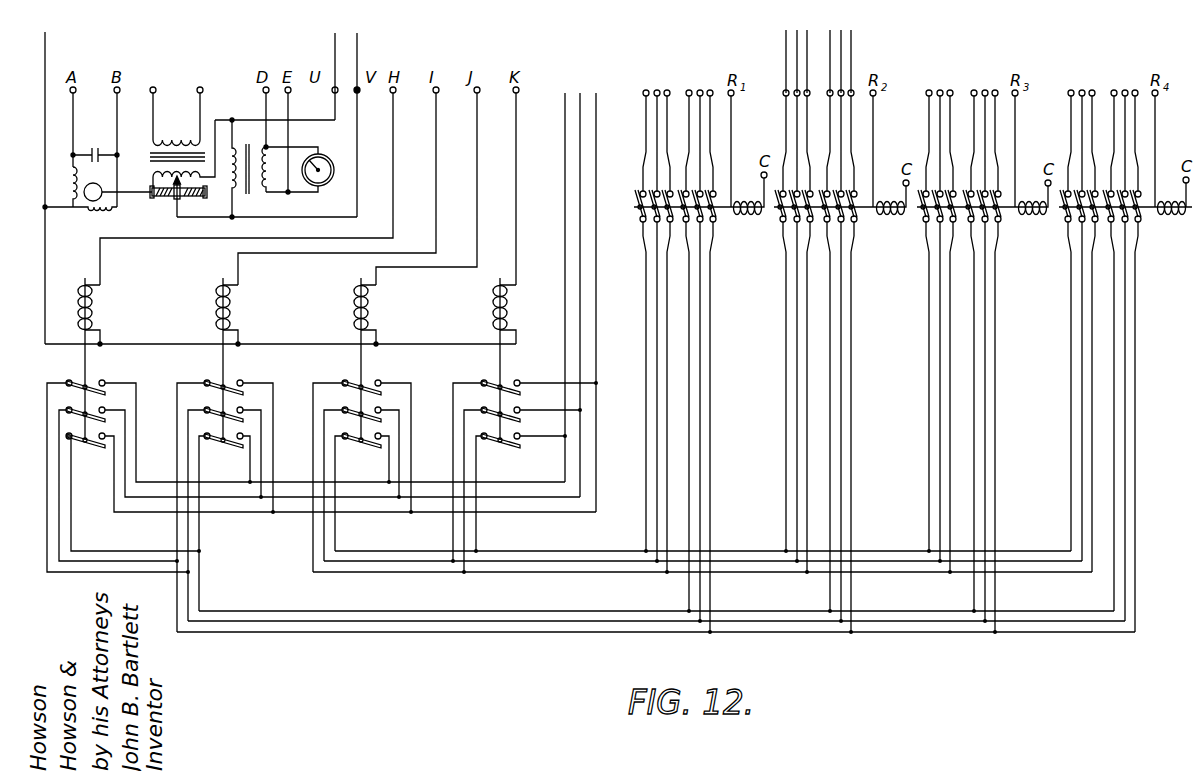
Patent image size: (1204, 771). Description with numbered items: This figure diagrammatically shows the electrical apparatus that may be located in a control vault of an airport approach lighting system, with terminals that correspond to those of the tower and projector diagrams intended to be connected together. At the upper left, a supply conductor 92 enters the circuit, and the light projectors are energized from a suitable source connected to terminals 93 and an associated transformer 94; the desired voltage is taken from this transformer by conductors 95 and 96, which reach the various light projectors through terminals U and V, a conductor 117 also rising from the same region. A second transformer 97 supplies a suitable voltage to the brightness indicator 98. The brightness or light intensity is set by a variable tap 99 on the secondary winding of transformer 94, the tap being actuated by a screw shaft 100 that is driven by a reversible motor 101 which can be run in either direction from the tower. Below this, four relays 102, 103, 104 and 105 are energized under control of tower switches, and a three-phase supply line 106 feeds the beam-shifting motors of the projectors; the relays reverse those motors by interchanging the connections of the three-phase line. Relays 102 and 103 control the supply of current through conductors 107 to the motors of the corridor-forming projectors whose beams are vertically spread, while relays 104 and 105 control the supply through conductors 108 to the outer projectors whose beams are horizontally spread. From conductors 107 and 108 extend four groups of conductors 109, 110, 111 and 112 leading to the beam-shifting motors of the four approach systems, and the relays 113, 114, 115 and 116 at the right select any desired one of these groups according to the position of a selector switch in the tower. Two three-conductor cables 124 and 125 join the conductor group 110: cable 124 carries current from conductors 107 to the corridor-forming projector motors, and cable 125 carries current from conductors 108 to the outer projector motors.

The conductor 92 is at (45, 48).
The terminals 93 is at (196, 88).
The transformer 94 is at (154, 160).
The conductor 95 is at (304, 120).
The conductor 96 is at (358, 138).
The second transformer 97 is at (248, 196).
The brightness indicator 98 is at (330, 173).
The variable tap 99 is at (174, 205).
The screw shaft 100 is at (170, 195).
The reversible motor 101 is at (86, 206).
The relay 102 is at (98, 308).
The relay 103 is at (236, 308).
The relay 104 is at (374, 308).
The relay 105 is at (513, 308).
The three-phase supply line 106 is at (611, 83).
The conductors 107 is at (474, 625).
The conductors 108 is at (564, 556).
The group of conductors 109 is at (684, 419).
The group of conductors 110 is at (823, 422).
The group of conductors 111 is at (966, 422).
The group of conductors 112 is at (1105, 421).
The relay 113 is at (721, 216).
The relay 114 is at (862, 216).
The relay 115 is at (1005, 216).
The relay 116 is at (1145, 216).
The conductor 117 is at (357, 43).
The three-conductor cable 124 is at (851, 44).
The three-conductor cable 125 is at (786, 43).